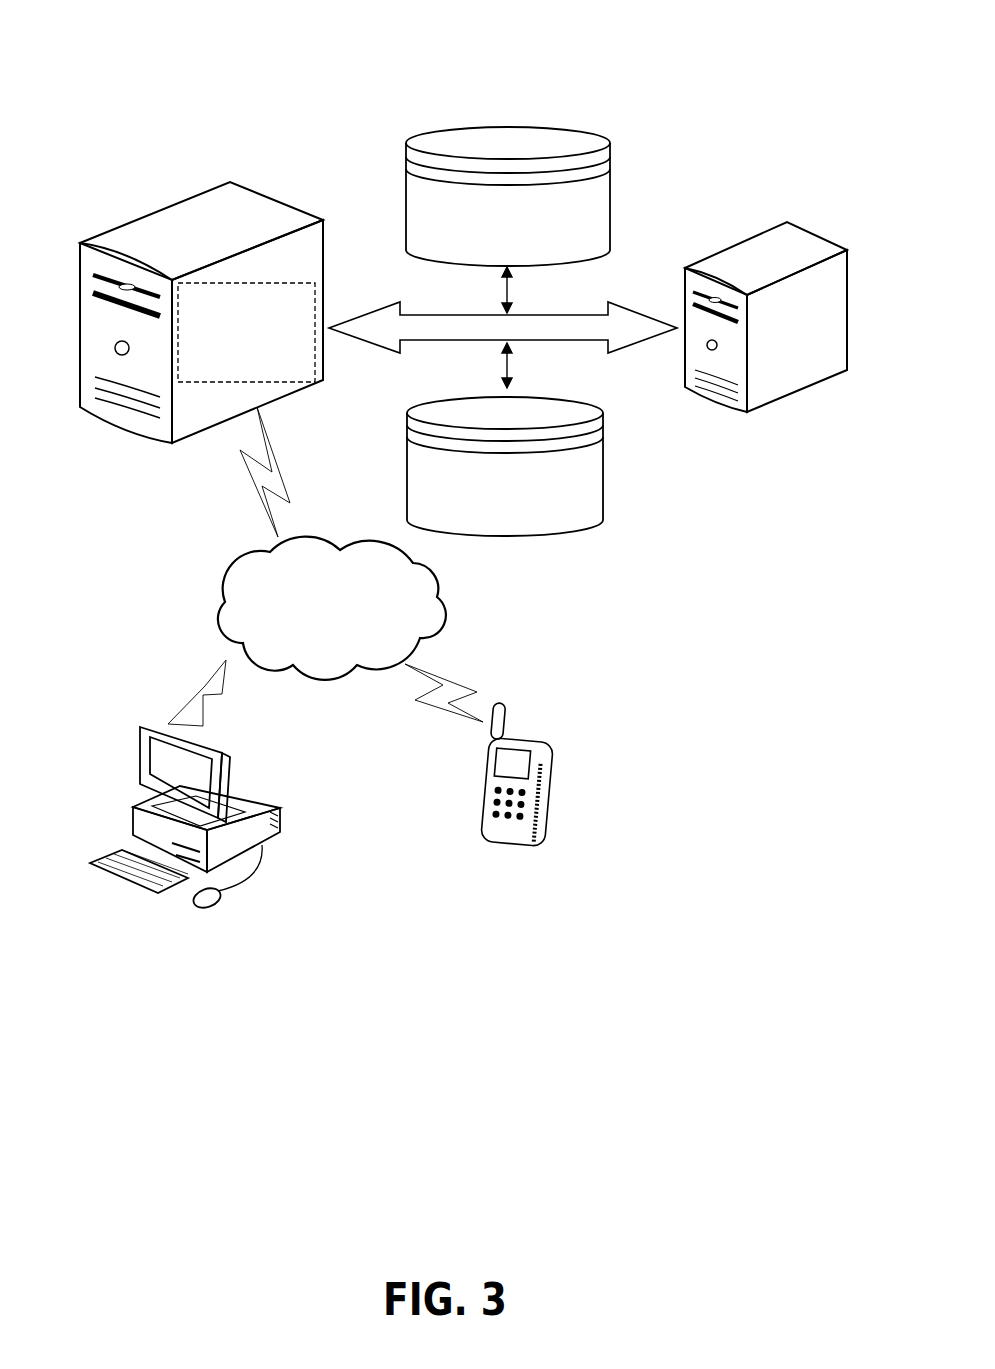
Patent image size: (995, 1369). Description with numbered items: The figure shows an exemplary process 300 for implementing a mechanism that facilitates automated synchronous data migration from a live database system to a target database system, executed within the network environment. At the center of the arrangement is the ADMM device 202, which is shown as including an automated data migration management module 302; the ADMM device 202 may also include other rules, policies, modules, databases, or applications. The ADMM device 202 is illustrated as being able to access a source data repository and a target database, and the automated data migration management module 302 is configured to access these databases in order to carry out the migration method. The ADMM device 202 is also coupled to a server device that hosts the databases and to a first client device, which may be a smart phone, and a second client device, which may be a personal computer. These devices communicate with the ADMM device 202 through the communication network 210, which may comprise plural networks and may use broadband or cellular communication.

The process 300 is at (295, 97).
The ADMM device 202 is at (168, 228).
The automated data migration management module 302 is at (246, 332).
The communication network 210 is at (422, 496).